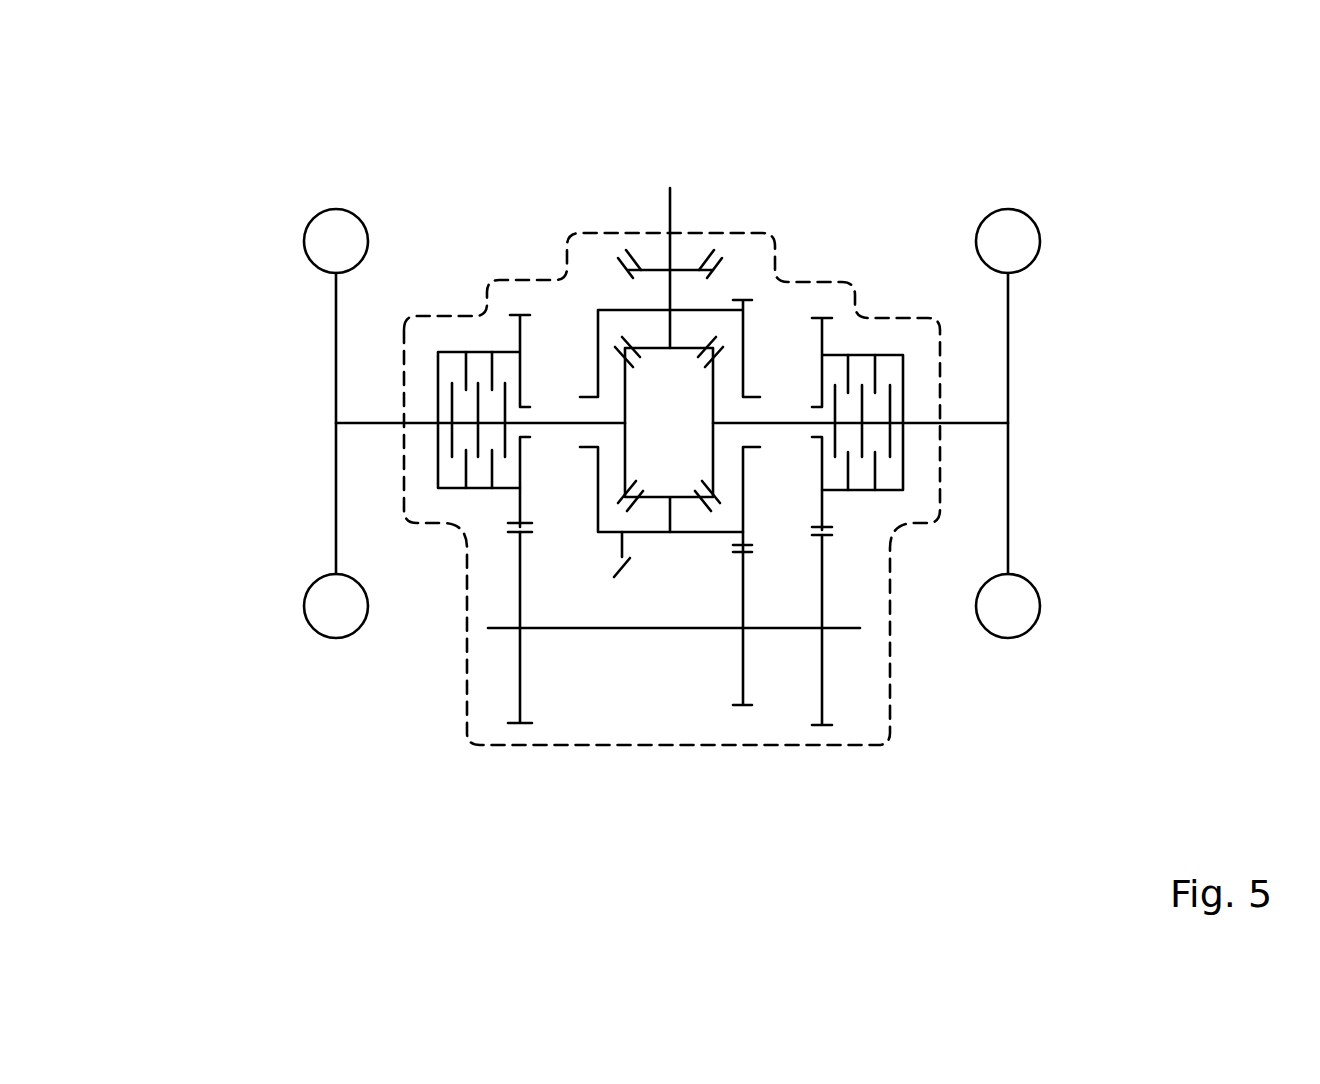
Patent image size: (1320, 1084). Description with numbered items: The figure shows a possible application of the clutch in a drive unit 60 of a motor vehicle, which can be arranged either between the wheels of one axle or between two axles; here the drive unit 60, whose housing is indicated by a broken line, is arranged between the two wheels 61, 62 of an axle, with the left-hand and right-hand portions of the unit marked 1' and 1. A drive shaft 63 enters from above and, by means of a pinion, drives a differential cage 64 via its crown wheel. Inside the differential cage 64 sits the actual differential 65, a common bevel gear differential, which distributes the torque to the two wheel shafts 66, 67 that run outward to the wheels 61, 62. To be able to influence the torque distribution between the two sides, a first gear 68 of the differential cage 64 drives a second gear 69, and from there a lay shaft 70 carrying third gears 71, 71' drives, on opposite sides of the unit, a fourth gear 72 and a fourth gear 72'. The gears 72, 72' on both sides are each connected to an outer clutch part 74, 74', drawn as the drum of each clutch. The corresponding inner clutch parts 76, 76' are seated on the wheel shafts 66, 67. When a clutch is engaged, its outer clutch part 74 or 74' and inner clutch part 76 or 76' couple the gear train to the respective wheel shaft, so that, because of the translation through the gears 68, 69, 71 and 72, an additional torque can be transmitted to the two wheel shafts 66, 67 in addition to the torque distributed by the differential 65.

The right axle drive unit 1 is at (950, 288).
The left axle drive unit 1' is at (418, 288).
The drive unit 60 is at (815, 282).
The wheel 61 is at (333, 243).
The wheel 62 is at (1010, 243).
The drive shaft 63 is at (668, 268).
The differential cage 64 is at (623, 295).
The differential 65 is at (670, 388).
The wheel shaft 66 is at (553, 423).
The wheel shaft 67 is at (810, 427).
The first gear 68 is at (743, 505).
The second gear 69 is at (743, 650).
The lay shaft 70 is at (565, 628).
The third gear 71 is at (792, 713).
The third gear 71' is at (380, 712).
The fourth gear 72 is at (759, 691).
The fourth gear 72' is at (341, 667).
The outer clutch part 74 is at (915, 605).
The outer clutch part 74' is at (340, 541).
The inner clutch part 76 is at (1011, 482).
The inner clutch part 76' is at (327, 352).